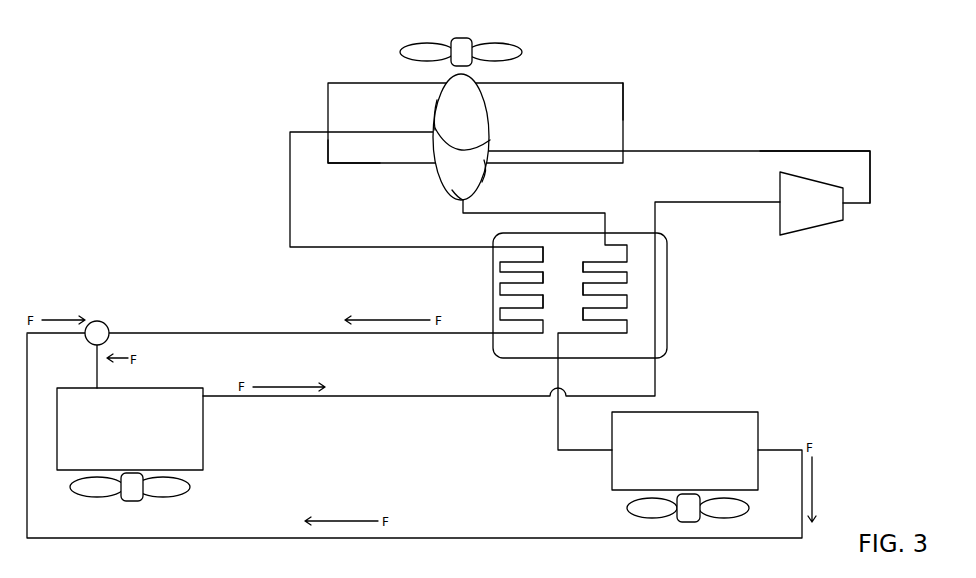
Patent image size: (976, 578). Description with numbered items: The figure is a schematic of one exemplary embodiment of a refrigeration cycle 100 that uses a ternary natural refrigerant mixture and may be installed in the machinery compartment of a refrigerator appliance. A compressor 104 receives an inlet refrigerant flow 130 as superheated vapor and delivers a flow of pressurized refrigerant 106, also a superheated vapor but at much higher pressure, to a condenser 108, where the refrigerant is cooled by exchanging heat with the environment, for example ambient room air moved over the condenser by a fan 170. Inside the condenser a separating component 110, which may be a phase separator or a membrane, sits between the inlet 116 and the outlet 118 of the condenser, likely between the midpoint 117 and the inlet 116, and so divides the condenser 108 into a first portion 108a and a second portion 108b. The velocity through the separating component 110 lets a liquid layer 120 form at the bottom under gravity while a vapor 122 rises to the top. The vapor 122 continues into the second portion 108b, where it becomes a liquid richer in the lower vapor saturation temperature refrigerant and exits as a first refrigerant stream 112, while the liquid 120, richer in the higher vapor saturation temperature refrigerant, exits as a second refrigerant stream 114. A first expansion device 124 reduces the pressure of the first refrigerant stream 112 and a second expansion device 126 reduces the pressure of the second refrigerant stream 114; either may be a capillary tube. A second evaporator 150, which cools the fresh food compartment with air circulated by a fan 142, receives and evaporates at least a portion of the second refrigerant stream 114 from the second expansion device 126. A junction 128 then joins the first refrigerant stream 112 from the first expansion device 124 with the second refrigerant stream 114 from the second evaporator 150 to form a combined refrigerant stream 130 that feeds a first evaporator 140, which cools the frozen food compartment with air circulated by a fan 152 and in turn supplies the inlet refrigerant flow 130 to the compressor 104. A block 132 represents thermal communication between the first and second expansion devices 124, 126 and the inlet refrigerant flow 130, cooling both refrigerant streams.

The refrigeration cycle 100 is at (737, 60).
The compressor 104 is at (815, 233).
The flow of pressurized refrigerant 106 is at (808, 150).
The condenser 108 is at (578, 80).
The first portion 108a is at (623, 93).
The second portion 108b is at (338, 165).
The separating component 110 is at (470, 78).
The first refrigerant stream 112 is at (335, 247).
The second refrigerant stream 114 is at (560, 212).
The inlet 116 is at (625, 148).
The midpoint 117 is at (484, 170).
The outlet 118 is at (324, 128).
The liquid layer 120 is at (452, 192).
The vapor 122 is at (437, 112).
The first expansion device 124 is at (548, 300).
The second expansion device 126 is at (630, 300).
The junction 128 is at (100, 322).
The combined refrigerant stream 130 is at (735, 203).
The block 132 is at (667, 297).
The first evaporator 140 is at (203, 445).
The fan 142 is at (625, 503).
The second evaporator 150 is at (692, 418).
The fan 152 is at (190, 487).
The fan 170 is at (495, 47).